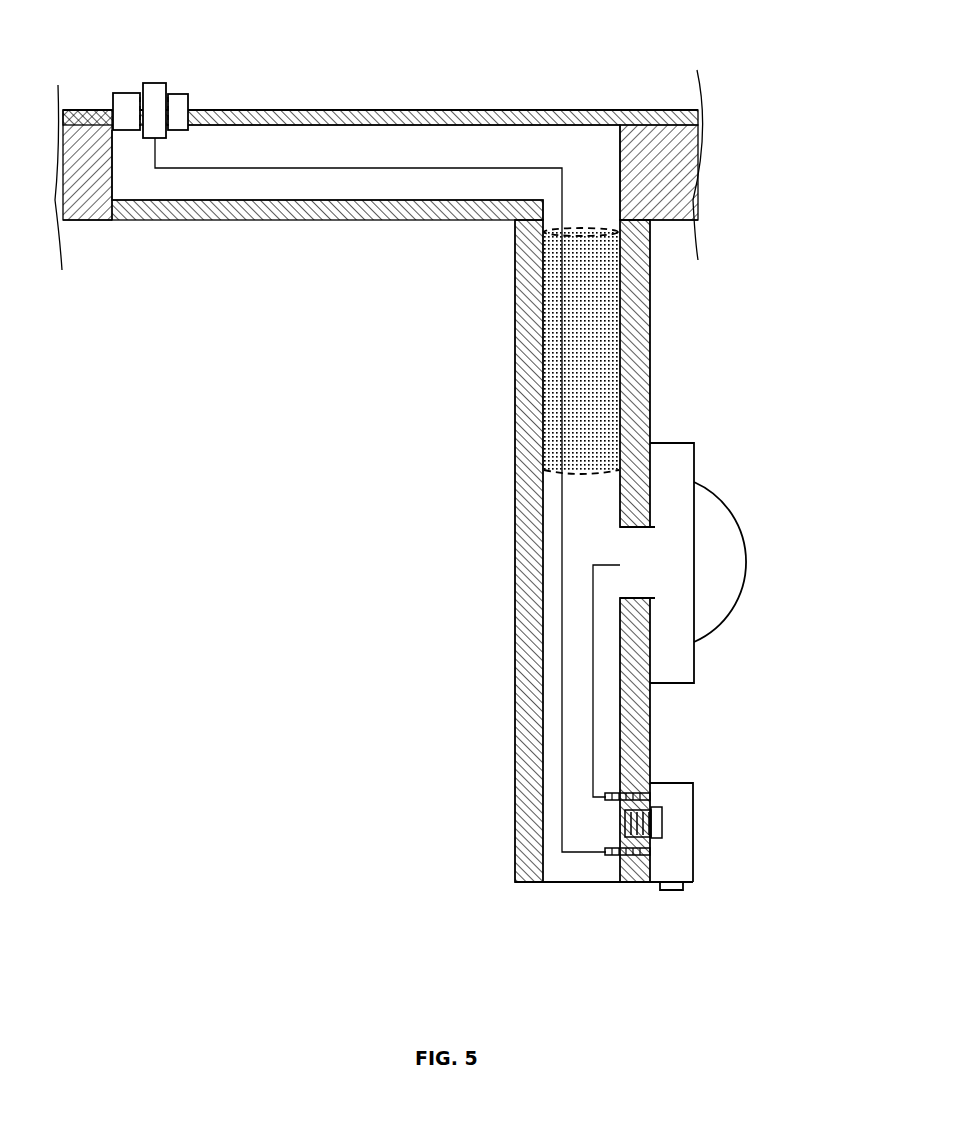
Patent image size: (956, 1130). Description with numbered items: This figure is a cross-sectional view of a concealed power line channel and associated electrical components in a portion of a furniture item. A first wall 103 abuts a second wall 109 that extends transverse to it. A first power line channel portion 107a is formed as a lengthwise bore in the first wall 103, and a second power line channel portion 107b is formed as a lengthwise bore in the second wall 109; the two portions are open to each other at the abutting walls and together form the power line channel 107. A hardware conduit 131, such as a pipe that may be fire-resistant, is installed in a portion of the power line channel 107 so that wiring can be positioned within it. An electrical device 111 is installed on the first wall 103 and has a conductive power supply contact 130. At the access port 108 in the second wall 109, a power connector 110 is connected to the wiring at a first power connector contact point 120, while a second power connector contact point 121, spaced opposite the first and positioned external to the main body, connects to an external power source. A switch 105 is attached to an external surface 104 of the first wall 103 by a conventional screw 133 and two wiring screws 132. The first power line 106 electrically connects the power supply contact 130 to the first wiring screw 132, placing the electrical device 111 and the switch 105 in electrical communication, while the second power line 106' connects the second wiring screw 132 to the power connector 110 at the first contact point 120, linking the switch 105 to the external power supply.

The first wall 103 is at (650, 383).
The external surface 104 is at (650, 768).
The switch 105 is at (685, 850).
The power line 106 is at (654, 681).
The second power line 106' is at (380, 495).
The power line channel 107 is at (608, 133).
The first power line channel portion 107a is at (555, 607).
The second power line channel portion 107b is at (532, 150).
The access port 108 is at (190, 97).
The second wall 109 is at (665, 120).
The power connector 110 is at (117, 85).
The electrical device 111 is at (722, 487).
The first power connector contact point 120 is at (148, 140).
The second power connector contact point 121 is at (152, 83).
The power supply contact 130 is at (618, 563).
The hardware conduit 131 is at (597, 335).
The wiring screws 132 is at (620, 854).
The conventional screw 133 is at (660, 826).